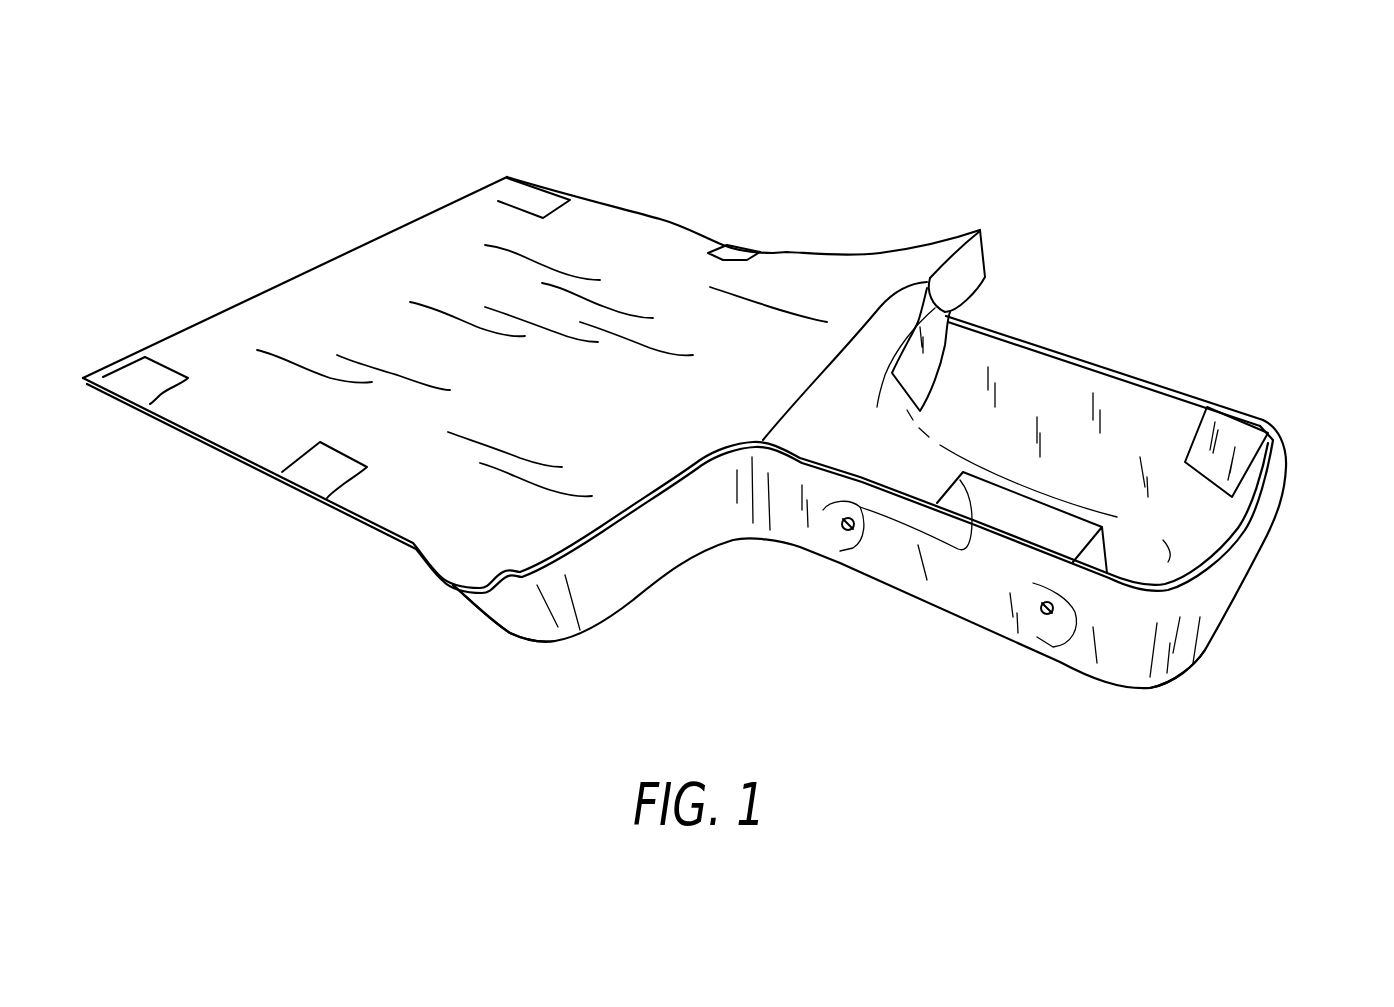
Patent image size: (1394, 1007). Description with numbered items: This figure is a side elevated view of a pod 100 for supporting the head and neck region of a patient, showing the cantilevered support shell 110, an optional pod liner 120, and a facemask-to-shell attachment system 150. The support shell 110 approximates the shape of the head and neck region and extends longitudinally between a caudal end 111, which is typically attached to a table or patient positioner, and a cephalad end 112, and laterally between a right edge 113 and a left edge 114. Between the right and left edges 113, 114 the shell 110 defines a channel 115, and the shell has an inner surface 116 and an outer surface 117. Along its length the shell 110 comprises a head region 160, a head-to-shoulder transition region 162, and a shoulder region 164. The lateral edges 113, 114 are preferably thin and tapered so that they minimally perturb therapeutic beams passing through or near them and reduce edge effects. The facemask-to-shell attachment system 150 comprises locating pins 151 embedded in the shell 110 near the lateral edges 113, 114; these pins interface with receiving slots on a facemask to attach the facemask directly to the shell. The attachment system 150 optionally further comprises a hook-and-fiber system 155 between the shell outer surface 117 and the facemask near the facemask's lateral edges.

The pod 100 is at (1271, 296).
The support shell 110 is at (907, 573).
The caudal end 111 is at (442, 205).
The cephalad end 112 is at (1263, 523).
The right edge 113 is at (1035, 347).
The left edge 114 is at (827, 463).
The channel 115 is at (935, 308).
The inner surface 116 is at (906, 357).
The outer surface 117 is at (1038, 637).
The pod liner 120 is at (1128, 425).
The facemask-to-shell attachment system 150 is at (960, 480).
The locating pins 151 is at (848, 530).
The hook-and-fiber system 155 is at (960, 587).
The head region 160 is at (1168, 660).
The head-to-shoulder transition region 162 is at (537, 620).
The shoulder region 164 is at (607, 232).